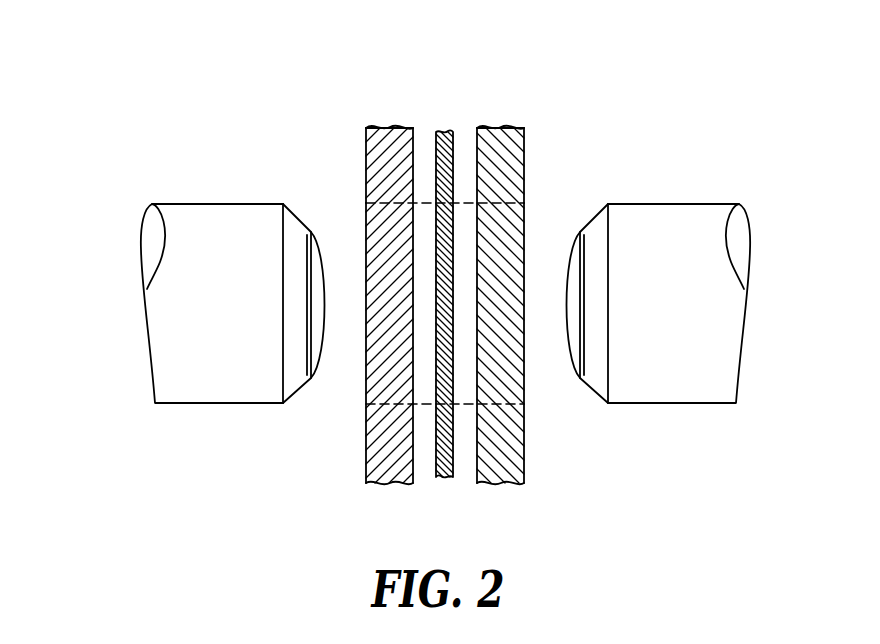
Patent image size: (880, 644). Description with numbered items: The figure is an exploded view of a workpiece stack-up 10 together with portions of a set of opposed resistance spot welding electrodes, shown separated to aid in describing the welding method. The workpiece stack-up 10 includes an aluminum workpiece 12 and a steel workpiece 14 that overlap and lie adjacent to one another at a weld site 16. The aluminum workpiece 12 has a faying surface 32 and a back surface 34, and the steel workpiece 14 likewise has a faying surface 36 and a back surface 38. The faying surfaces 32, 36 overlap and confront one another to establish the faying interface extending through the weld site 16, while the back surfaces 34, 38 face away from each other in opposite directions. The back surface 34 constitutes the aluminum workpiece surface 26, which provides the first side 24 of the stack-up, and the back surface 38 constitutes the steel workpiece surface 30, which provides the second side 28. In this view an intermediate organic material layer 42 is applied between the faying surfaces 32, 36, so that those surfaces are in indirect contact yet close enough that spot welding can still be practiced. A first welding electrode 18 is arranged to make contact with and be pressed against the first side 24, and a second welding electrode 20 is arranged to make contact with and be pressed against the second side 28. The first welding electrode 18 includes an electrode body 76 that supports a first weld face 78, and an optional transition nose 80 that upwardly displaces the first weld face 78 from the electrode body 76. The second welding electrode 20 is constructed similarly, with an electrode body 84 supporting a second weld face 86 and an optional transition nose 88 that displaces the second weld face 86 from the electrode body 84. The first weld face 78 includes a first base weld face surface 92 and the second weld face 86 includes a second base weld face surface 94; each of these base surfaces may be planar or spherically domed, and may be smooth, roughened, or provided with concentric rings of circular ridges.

The workpiece stack-up 10 is at (346, 479).
The aluminum workpiece 12 is at (388, 130).
The steel workpiece 14 is at (500, 134).
The weld site 16 is at (492, 406).
The first welding electrode 18 is at (212, 412).
The second welding electrode 20 is at (680, 412).
The first side 24 is at (365, 227).
The aluminum workpiece surface 26 is at (366, 177).
The second side 28 is at (525, 227).
The steel workpiece surface 30 is at (524, 177).
The faying surface 32 is at (414, 139).
The back surface 34 is at (366, 128).
The faying surface 36 is at (476, 142).
The back surface 38 is at (524, 128).
The intermediate organic material layer 42 is at (446, 462).
The electrode body 76 is at (235, 387).
The first weld face 78 is at (327, 305).
The transition nose 80 is at (294, 392).
The electrode body 84 is at (657, 388).
The second weld face 86 is at (563, 305).
The transition nose 88 is at (597, 393).
The first base weld face surface 92 is at (327, 323).
The second base weld face surface 94 is at (563, 323).